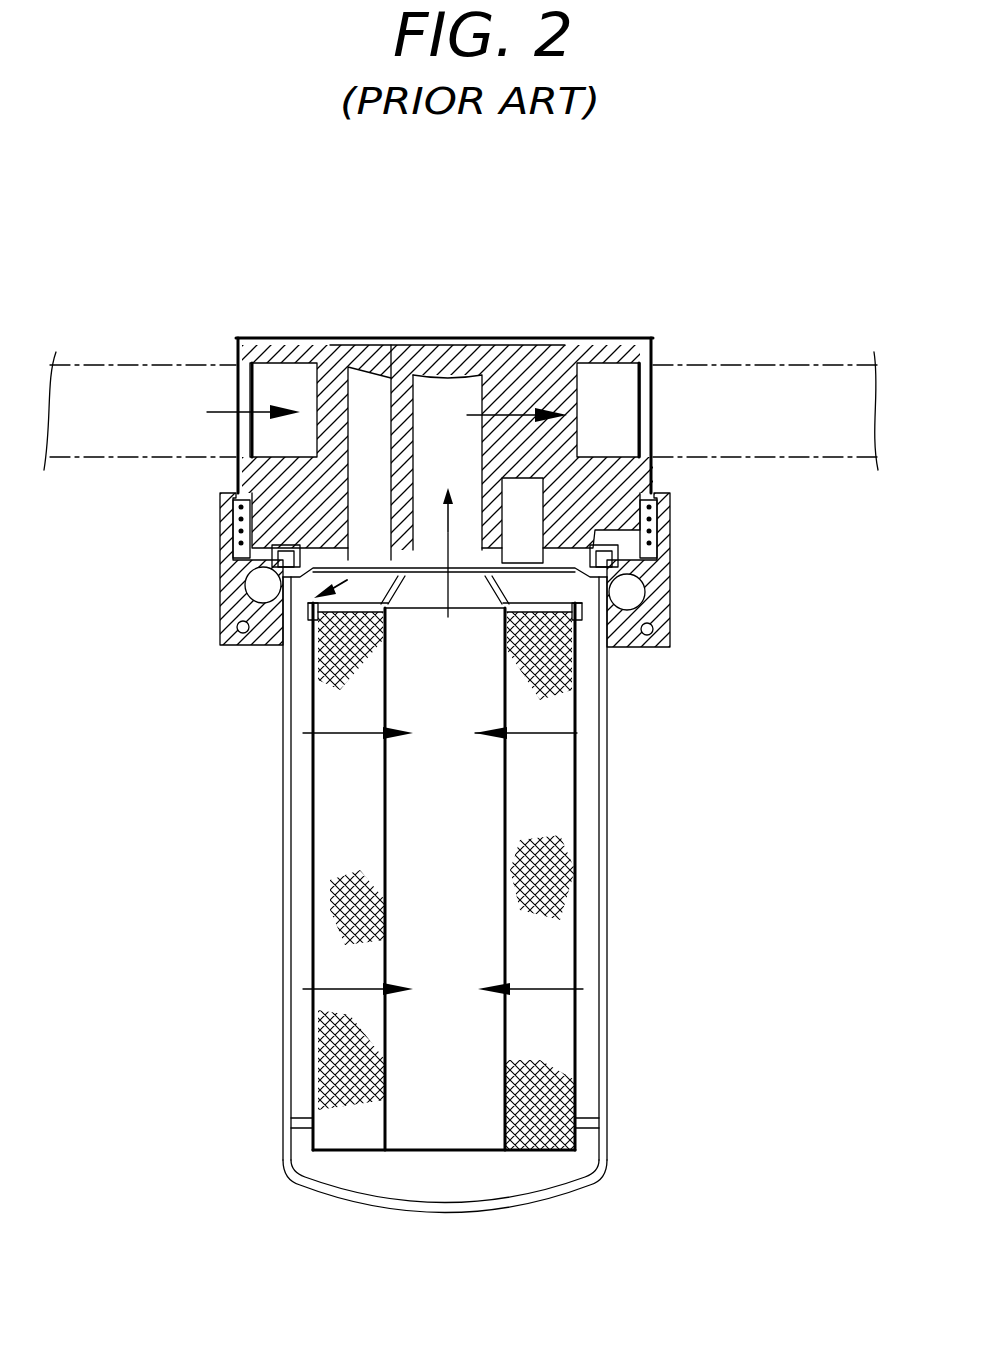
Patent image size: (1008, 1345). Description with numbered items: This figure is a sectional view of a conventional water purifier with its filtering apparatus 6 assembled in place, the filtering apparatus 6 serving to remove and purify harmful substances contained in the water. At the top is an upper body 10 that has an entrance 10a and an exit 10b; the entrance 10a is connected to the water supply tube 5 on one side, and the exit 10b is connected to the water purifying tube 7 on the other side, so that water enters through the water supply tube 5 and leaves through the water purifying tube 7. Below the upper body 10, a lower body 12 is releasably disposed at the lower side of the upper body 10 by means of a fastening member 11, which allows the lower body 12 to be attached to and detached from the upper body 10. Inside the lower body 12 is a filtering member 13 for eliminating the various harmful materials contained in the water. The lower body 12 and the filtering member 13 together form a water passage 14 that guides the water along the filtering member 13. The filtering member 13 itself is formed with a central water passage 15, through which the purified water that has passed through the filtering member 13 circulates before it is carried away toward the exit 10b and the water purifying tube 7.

The water supply tube 5 is at (112, 375).
The filtering apparatus 6 is at (608, 283).
The water purifying tube 7 is at (808, 470).
The upper body 10 is at (452, 360).
The entrance 10a is at (276, 393).
The exit 10b is at (612, 405).
The fastening member 11 is at (658, 588).
The lower body 12 is at (607, 855).
The filtering member 13 is at (545, 763).
The water passage 14 is at (295, 848).
The central water passage 15 is at (465, 1057).